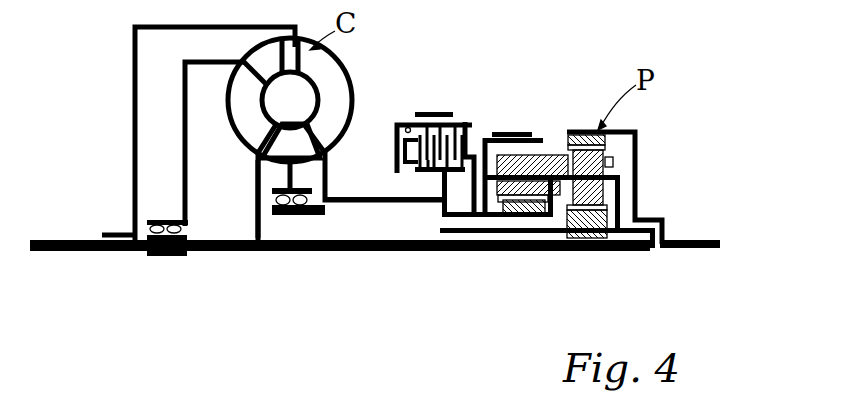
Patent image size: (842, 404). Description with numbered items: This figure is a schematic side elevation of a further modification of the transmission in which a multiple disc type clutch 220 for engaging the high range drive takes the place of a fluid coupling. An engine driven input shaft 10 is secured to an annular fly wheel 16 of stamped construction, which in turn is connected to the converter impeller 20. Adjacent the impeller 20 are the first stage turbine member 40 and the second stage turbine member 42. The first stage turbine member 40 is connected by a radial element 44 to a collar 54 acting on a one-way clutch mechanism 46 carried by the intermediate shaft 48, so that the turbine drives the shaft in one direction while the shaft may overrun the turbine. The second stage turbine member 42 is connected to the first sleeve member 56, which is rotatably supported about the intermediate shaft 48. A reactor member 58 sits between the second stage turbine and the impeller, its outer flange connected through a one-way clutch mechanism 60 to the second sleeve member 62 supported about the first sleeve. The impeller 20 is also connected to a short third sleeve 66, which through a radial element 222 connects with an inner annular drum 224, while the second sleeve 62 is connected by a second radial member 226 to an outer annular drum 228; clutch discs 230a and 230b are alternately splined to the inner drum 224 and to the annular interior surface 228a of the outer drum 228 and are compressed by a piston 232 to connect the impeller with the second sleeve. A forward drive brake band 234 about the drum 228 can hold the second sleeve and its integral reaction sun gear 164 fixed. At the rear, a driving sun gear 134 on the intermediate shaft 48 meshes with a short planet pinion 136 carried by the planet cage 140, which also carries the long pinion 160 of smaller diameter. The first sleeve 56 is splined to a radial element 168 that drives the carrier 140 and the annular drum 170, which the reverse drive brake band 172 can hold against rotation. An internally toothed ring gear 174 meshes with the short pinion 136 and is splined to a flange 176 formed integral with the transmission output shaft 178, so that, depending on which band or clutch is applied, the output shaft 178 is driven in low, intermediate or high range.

The input shaft 10 is at (78, 240).
The fly wheel 16 is at (133, 77).
The impeller 20 is at (347, 86).
The first stage turbine member 40 is at (262, 57).
The second stage turbine member 42 is at (240, 127).
The radial element 44 is at (183, 119).
The one-way clutch mechanism 46 is at (186, 230).
The intermediate shaft 48 is at (226, 242).
The collar 54 is at (257, 182).
The first sleeve member 56 is at (282, 213).
The reactor member 58 is at (257, 166).
The one-way clutch mechanism 60 is at (306, 204).
The second sleeve member 62 is at (325, 216).
The third sleeve 66 is at (365, 197).
The driving sun gear 134 is at (588, 245).
The short planet pinion 136 is at (606, 143).
The planet cage 140 is at (607, 193).
The long pinion 160 is at (604, 161).
The reaction sun gear 164 is at (522, 205).
The radial element 168 is at (500, 200).
The annular drum 170 is at (535, 138).
The reverse drive brake band 172 is at (530, 131).
The ring gear 174 is at (636, 131).
The flange 176 is at (643, 217).
The transmission output shaft 178 is at (700, 240).
The multiple disc type clutch 220 is at (405, 123).
The radial element 222 is at (441, 178).
The annular drum 224 is at (426, 172).
The second radial member 226 is at (472, 218).
The outer annular drum 228 is at (465, 125).
The annular interior surface 228a is at (413, 115).
The clutch discs 230a is at (478, 137).
The clutch discs 230b is at (416, 170).
The piston 232 is at (404, 150).
The forward drive brake band 234 is at (428, 114).